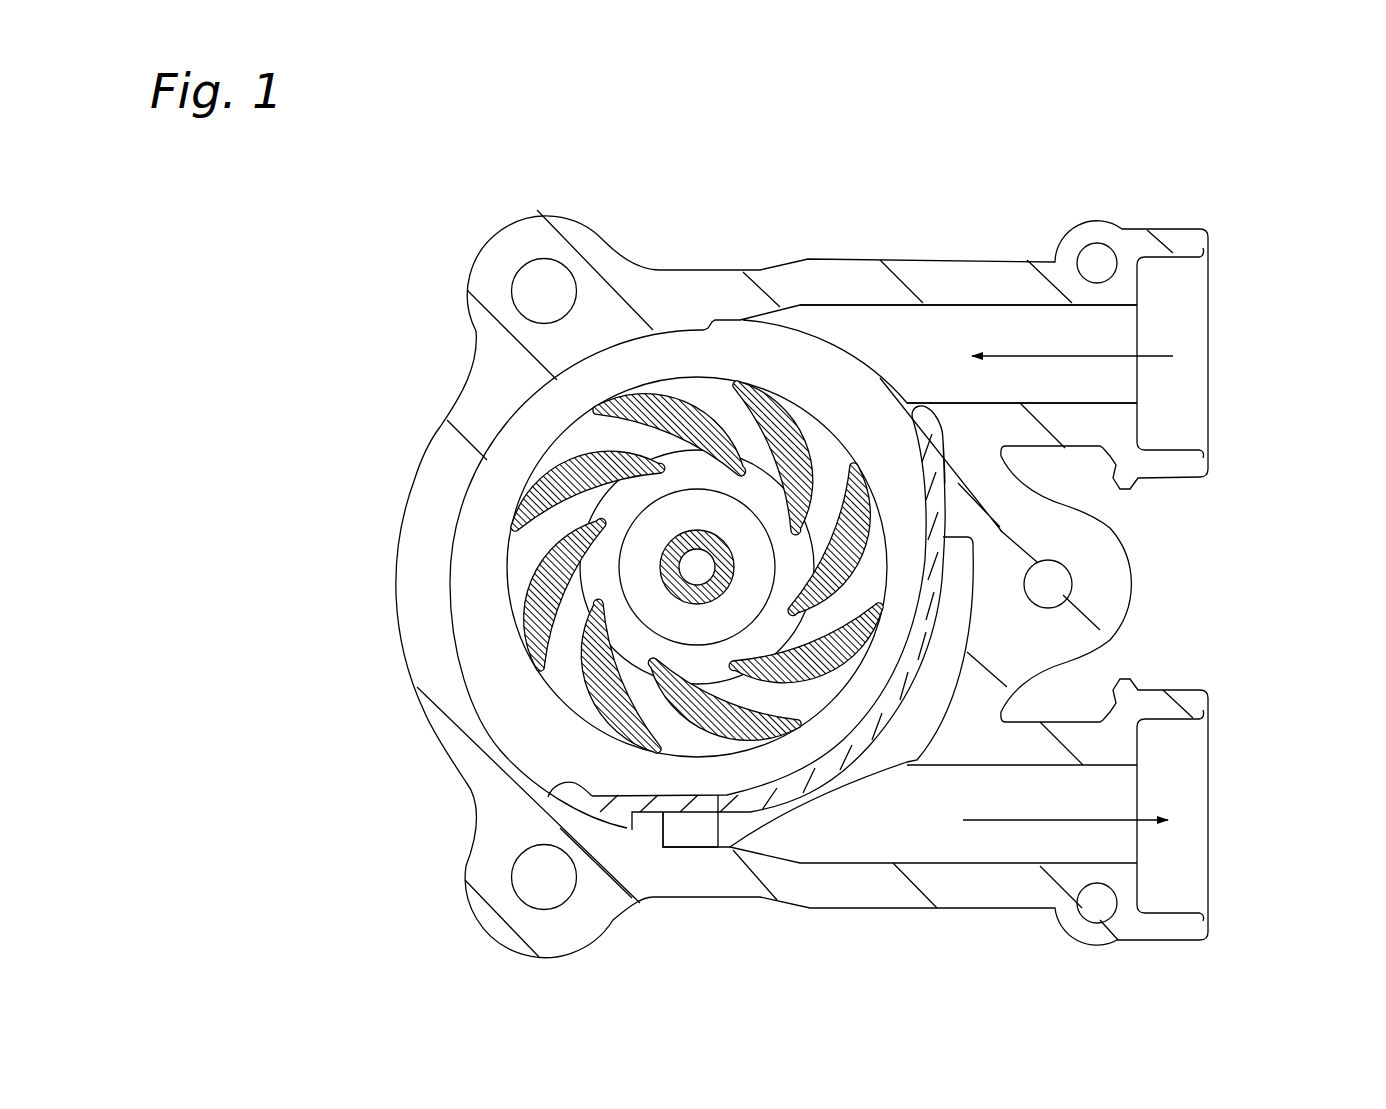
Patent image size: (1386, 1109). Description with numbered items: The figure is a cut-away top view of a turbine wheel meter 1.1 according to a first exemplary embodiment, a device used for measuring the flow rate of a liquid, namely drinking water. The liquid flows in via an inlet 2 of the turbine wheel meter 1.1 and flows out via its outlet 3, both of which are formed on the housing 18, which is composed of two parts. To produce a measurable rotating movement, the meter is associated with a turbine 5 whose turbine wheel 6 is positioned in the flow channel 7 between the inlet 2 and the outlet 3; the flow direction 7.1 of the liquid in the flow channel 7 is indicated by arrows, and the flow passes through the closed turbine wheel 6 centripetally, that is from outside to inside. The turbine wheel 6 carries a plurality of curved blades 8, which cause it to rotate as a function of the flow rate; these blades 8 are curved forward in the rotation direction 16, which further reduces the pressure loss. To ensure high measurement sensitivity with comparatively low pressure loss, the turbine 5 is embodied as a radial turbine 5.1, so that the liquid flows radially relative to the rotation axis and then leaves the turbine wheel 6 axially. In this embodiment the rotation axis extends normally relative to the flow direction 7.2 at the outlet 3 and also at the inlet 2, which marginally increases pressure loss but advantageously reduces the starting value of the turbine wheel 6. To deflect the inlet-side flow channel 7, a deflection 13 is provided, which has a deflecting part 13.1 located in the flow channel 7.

The turbine wheel meter 1.1 is at (385, 348).
The inlet 2 is at (1188, 300).
The outlet 3 is at (1185, 767).
The turbine 5 is at (512, 675).
The radial turbine 5.1 is at (509, 603).
The turbine wheel 6 is at (712, 393).
The flow channel 7 is at (930, 345).
The flow direction 7.1 is at (1030, 355).
The flow direction at the outlet 7.2 is at (1015, 820).
The curved blades 8 is at (617, 397).
The deflection 13 is at (670, 777).
The deflecting part 13.1 is at (720, 760).
The rotation direction 16 is at (690, 508).
The housing 18 is at (556, 237).